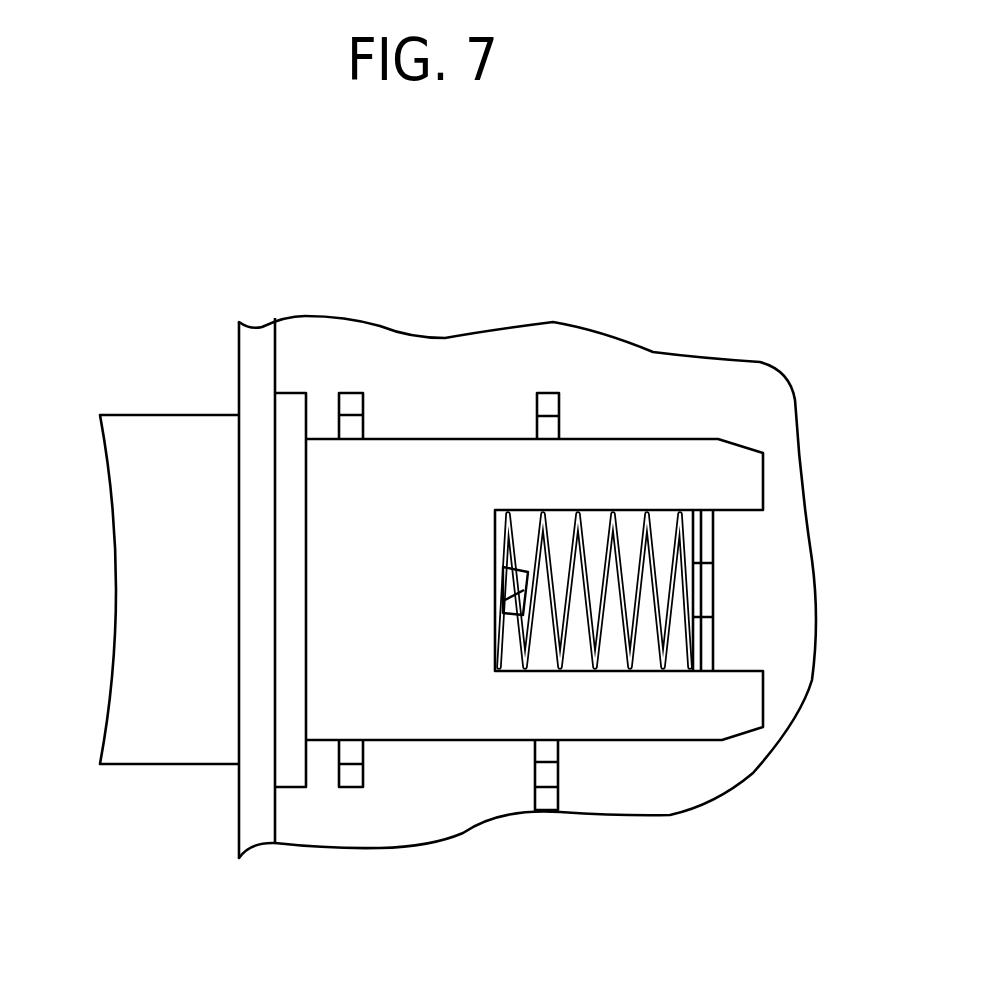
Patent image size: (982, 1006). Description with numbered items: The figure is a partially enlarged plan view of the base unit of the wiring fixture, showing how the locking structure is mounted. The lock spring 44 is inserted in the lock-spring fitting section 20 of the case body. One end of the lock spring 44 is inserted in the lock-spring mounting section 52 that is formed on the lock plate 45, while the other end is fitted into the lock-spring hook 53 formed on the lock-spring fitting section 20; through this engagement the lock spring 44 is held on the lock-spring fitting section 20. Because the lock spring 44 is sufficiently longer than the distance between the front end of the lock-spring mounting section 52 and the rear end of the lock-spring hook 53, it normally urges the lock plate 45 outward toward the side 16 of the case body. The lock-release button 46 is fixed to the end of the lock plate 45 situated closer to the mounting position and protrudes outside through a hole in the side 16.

The side 16 is at (249, 807).
The lock-release button 46 is at (169, 588).
The lock plate 45 is at (445, 465).
The lock-spring fitting section 20 is at (547, 402).
The lock spring 44 is at (595, 665).
The lock-spring mounting section 52 is at (508, 613).
The lock-spring hook 53 is at (698, 590).